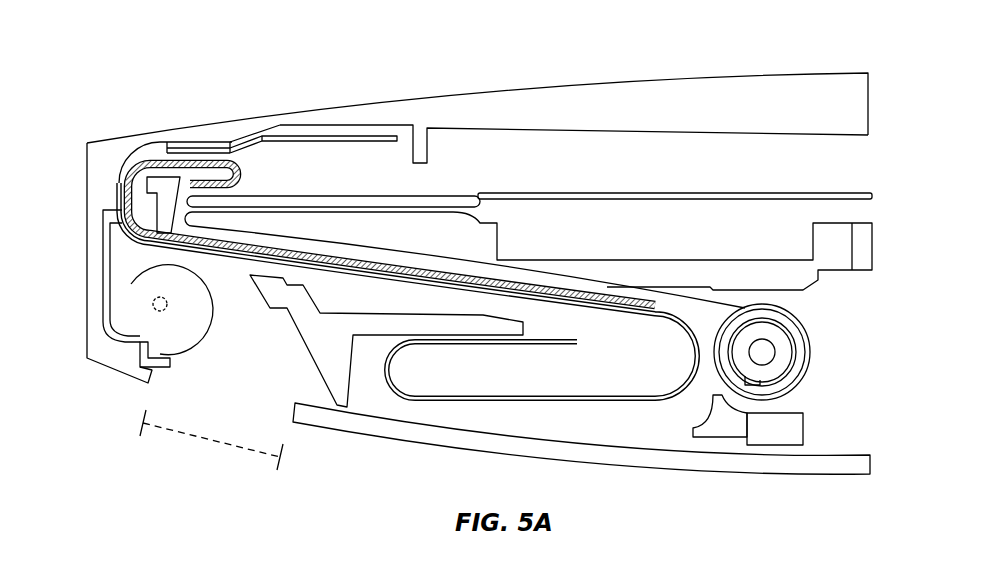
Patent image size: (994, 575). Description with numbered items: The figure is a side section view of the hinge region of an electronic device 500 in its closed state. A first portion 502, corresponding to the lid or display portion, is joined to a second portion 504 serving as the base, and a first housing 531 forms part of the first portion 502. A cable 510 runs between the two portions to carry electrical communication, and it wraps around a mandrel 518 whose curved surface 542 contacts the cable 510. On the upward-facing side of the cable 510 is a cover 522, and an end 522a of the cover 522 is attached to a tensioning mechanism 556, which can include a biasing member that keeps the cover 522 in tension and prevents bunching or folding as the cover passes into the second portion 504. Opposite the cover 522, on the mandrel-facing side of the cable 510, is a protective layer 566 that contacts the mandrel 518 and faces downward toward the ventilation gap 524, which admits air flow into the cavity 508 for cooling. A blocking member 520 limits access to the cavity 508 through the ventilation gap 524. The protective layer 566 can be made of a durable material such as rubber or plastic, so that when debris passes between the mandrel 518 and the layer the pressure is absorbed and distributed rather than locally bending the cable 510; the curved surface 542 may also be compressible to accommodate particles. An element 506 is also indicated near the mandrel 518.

The electronic device 500 is at (168, 98).
The first housing portion 502 is at (748, 73).
The second housing portion 504 is at (760, 480).
The pivot axis 506 is at (153, 312).
The belt 508 is at (646, 338).
The cable 510 is at (573, 395).
The mandrel 518 is at (180, 340).
The bracket arm 520 is at (354, 343).
The cover 522 is at (293, 257).
The flexible circuit end portion 522a is at (236, 170).
The ventilation gap 524 is at (212, 443).
The housing wall 531 is at (748, 118).
The curved surface 542 is at (213, 320).
The roller 556 is at (815, 351).
The protective layer 566 is at (192, 263).